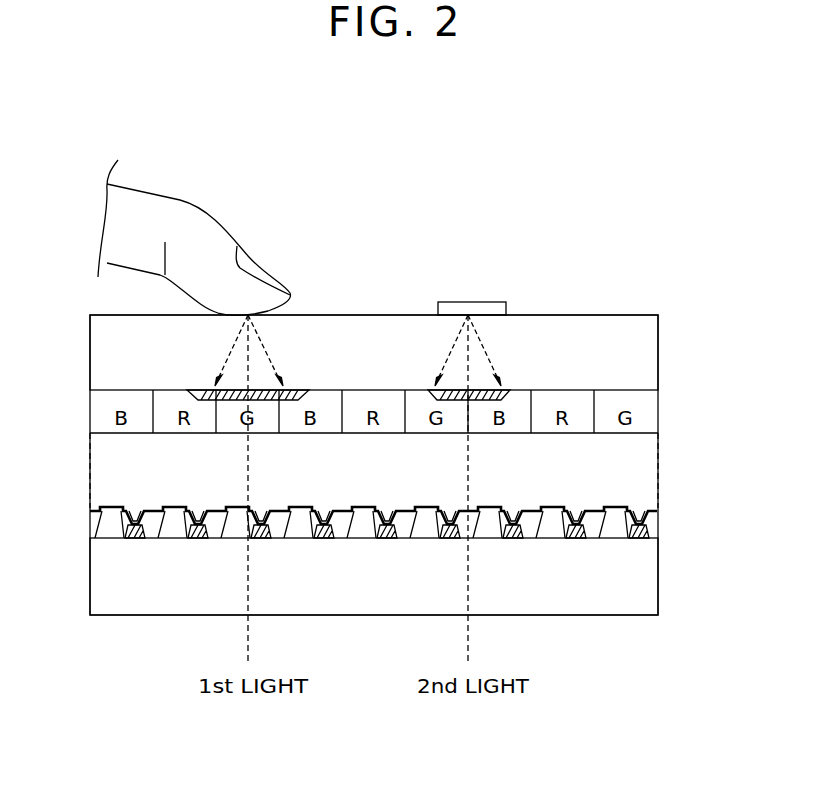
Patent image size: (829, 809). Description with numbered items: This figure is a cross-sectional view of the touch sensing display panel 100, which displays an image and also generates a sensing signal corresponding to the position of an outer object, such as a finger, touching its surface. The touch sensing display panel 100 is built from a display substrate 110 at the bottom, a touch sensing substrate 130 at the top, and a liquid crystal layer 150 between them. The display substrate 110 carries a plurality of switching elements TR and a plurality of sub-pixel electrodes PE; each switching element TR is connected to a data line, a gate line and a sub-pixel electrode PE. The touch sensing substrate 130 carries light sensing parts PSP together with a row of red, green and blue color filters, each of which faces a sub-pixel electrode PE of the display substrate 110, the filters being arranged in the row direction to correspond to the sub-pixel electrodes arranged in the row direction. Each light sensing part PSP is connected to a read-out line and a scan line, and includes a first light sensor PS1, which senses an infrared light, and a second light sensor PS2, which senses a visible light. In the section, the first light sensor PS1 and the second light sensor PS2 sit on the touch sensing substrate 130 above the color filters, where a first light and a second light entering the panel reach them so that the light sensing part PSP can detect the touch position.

The touch sensing display panel 100 is at (76, 314).
The display substrate 110 is at (652, 583).
The touch sensing substrate 130 is at (652, 357).
The liquid crystal layer 150 is at (670, 433).
The light sensing part PSP is at (348, 307).
The first light sensor PS1 is at (294, 391).
The second light sensor PS2 is at (455, 391).
The sub-pixel electrode PE is at (353, 526).
The switching element TR is at (385, 538).